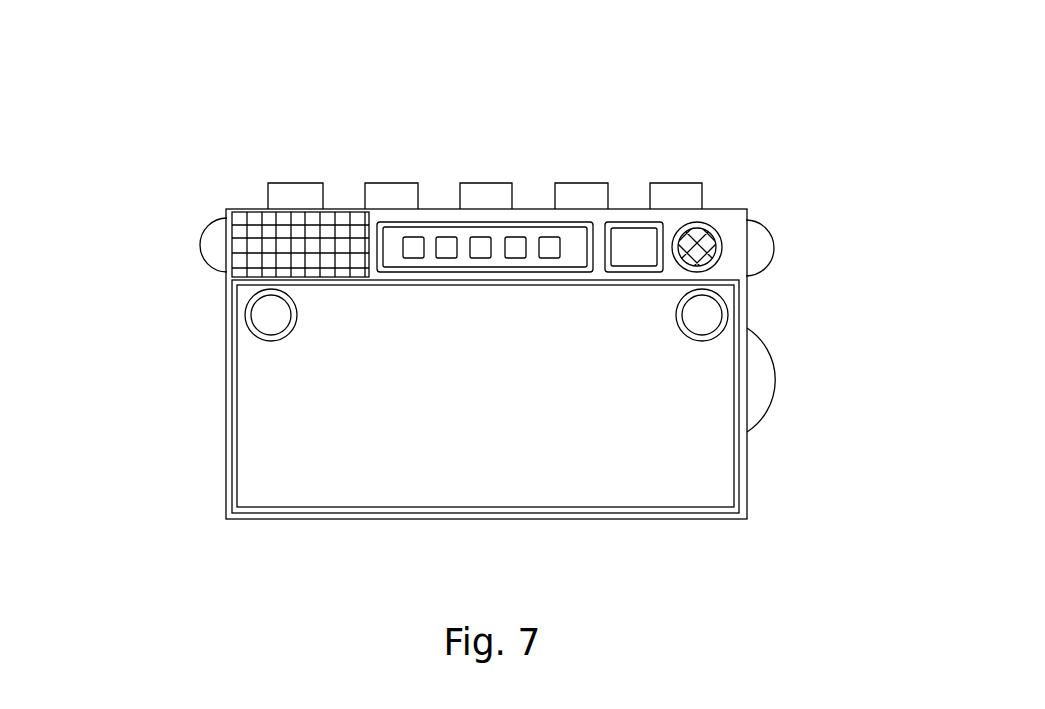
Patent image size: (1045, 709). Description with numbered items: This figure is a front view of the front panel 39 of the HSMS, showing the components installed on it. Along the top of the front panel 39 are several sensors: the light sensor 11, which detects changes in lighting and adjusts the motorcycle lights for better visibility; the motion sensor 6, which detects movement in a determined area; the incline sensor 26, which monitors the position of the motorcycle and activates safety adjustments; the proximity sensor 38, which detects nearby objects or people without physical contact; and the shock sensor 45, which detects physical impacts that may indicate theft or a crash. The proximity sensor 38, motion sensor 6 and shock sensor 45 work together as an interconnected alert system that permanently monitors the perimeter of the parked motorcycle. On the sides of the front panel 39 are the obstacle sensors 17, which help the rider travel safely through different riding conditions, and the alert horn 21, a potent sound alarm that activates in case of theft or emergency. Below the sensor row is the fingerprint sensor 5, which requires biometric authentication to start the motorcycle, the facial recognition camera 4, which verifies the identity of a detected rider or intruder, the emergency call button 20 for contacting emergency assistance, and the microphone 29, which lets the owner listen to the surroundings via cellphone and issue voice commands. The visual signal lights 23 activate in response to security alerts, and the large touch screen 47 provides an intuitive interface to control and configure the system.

The facial recognition camera 4 is at (470, 260).
The fingerprint sensor 5 is at (234, 226).
The motion sensor 6 is at (403, 168).
The light sensor 11 is at (306, 168).
The obstacle sensor 17 is at (187, 248).
The 911 button 20 is at (668, 209).
The alert horn 21 is at (789, 379).
The visual signal lights 23 is at (259, 322).
The incline sensor 26 is at (499, 168).
The microphone 29 is at (730, 221).
The proximity sensor 38 is at (593, 168).
The front panel 39 is at (764, 514).
The shock sensor 45 is at (688, 168).
The touch screen 47 is at (292, 476).